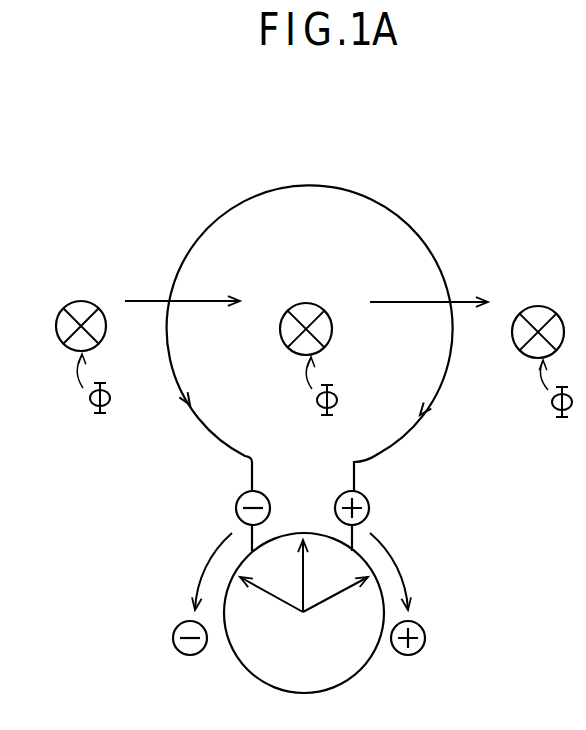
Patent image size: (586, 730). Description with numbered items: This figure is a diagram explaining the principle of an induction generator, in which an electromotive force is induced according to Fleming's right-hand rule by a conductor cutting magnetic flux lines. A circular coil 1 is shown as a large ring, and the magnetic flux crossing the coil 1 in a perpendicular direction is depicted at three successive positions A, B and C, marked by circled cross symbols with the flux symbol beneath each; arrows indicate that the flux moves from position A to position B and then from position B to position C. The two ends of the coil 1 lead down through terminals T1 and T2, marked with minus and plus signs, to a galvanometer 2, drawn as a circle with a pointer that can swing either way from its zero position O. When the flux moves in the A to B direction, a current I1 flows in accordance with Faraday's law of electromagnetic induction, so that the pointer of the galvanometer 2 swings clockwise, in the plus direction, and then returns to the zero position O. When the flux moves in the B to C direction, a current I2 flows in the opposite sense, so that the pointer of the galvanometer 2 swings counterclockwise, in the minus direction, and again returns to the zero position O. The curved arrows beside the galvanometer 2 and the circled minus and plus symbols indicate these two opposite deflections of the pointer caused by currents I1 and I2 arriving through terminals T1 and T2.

The circular coil 1 is at (400, 215).
The galvanometer 2 is at (357, 672).
The flux position A is at (83, 337).
The flux position B is at (308, 339).
The flux position C is at (542, 340).
The terminal T1 is at (233, 517).
The terminal T2 is at (370, 517).
The current I1 is at (182, 441).
The current I2 is at (442, 442).
The origin O is at (305, 518).